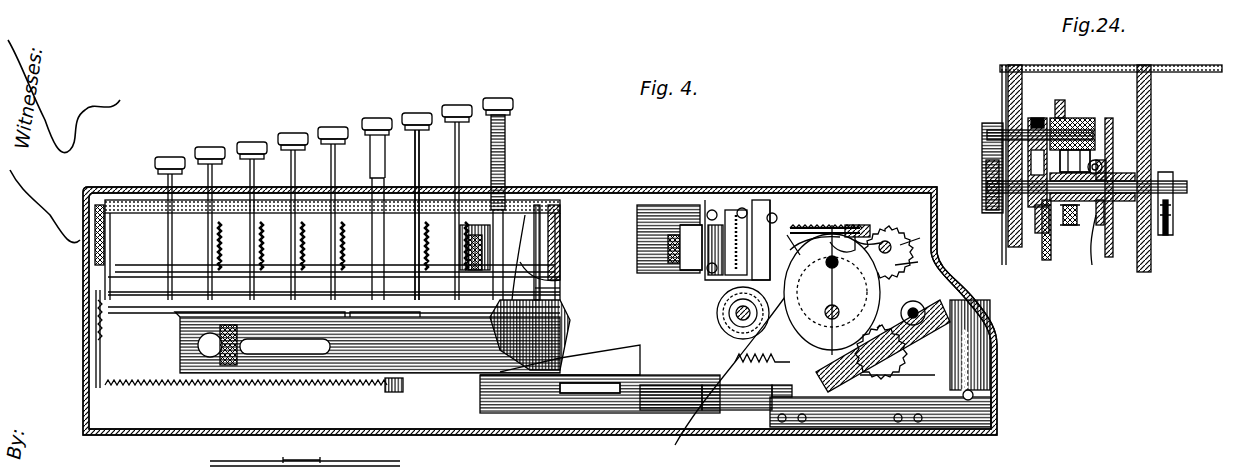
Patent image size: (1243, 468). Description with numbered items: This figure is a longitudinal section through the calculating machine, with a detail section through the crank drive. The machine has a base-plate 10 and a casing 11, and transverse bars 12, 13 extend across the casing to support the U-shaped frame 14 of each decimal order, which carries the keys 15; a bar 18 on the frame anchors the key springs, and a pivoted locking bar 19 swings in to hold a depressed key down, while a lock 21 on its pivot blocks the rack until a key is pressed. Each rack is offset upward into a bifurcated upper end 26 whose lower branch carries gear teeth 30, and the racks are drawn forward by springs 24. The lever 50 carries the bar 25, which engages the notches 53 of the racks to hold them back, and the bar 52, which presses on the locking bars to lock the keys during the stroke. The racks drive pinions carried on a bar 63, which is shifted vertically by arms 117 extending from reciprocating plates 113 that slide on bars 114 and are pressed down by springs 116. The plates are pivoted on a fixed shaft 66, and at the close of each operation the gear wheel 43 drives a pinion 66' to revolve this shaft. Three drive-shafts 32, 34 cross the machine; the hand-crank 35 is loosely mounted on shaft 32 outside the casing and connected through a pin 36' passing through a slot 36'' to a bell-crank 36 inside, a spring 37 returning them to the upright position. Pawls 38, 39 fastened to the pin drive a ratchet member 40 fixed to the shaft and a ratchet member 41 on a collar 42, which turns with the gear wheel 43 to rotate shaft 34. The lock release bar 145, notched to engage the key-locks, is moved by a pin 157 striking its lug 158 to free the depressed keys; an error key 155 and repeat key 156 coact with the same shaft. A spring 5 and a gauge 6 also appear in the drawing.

In FIG. 4, the base-plate 10 is at (565, 432).
In FIG. 4, the springs 24 is at (860, 408).
In FIG. 4, the reciprocating plates 113 is at (310, 462).
In FIG. 4, the gauge 6 is at (301, 447).
In FIG. 4, the transverse bar 12 is at (95, 246).
In FIG. 4, the casing 11 is at (85, 300).
In FIG. 4, the U-shaped frame 14 is at (96, 278).
In FIG. 4, the locking bar 19 is at (138, 270).
In FIG. 4, the bar 18 is at (312, 275).
In FIG. 4, the repeat key 156 is at (378, 118).
In FIG. 4, the keys 15 is at (465, 170).
In FIG. 4, the error key 155 is at (506, 150).
In FIG. 4, the lock release bar 145 is at (528, 192).
In FIG. 4, the bar 52 is at (462, 252).
In FIG. 4, the transverse bar 13 is at (556, 222).
In FIG. 4, the pin 157 is at (555, 260).
In FIG. 4, the lug 158 is at (560, 290).
In FIG. 4, the locking bar 25 is at (498, 340).
In FIG. 4, the notches 53 is at (490, 328).
In FIG. 4, the bifurcated upper end 26 is at (480, 372).
In FIG. 4, the lever 50 is at (640, 358).
In FIG. 4, the gear teeth 30 is at (913, 313).
In FIG. 4, the pawl 39 is at (807, 307).
In FIG. 24, the pawl 39 is at (1075, 122).
In FIG. 4, the drive-shaft 32 is at (830, 375).
In FIG. 24, the drive-shaft 32 is at (1185, 182).
In FIG. 4, the spring 37 is at (722, 378).
In FIG. 4, the spring 5 is at (754, 329).
In FIG. 4, the bar 63 is at (675, 205).
In FIG. 4, the arms 117 is at (718, 210).
In FIG. 4, the springs 116 is at (762, 200).
In FIG. 4, the lock 21 is at (832, 290).
In FIG. 4, the pawl 38 is at (820, 228).
In FIG. 24, the pawl 38 is at (1062, 102).
In FIG. 4, the pin 36' is at (880, 200).
In FIG. 24, the pin 36' is at (1151, 174).
In FIG. 4, the bell-crank 36 is at (908, 222).
In FIG. 24, the bell-crank 36 is at (1040, 143).
In FIG. 4, the fixed shaft 66 is at (937, 243).
In FIG. 4, the pinion 66' is at (936, 265).
In FIG. 4, the drive-shaft 34 is at (935, 300).
In FIG. 24, the drive-shaft 34 is at (1002, 268).
In FIG. 4, the ratchet member 40 is at (886, 352).
In FIG. 24, the ratchet member 40 is at (1045, 260).
In FIG. 4, the gear wheel 43 is at (897, 375).
In FIG. 24, the gear wheel 43 is at (1113, 136).
In FIG. 24, the bars 114 is at (1150, 255).
In FIG. 24, the hand-crank 35 is at (987, 135).
In FIG. 24, the slot 36'' is at (969, 150).
In FIG. 24, the ratchet member 41 is at (1070, 228).
In FIG. 24, the collar 42 is at (1096, 250).